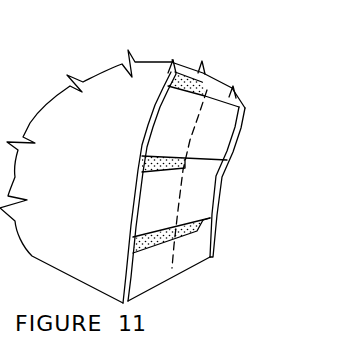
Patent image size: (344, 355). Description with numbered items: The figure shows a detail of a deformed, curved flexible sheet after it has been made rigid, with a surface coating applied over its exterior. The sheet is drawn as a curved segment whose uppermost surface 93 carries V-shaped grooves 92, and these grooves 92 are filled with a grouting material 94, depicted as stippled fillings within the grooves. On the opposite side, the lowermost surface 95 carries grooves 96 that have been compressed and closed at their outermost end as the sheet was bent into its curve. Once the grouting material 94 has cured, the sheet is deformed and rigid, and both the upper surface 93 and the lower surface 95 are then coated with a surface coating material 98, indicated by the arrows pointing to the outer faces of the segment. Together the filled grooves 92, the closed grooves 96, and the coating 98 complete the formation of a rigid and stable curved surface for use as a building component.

The V-shaped grooves 92 is at (142, 253).
The uppermost surface 93 is at (161, 62).
The grouting material 94 is at (160, 151).
The lowermost surface 95 is at (247, 137).
The grooves 96 is at (200, 225).
The surface coating material 98 is at (70, 128).